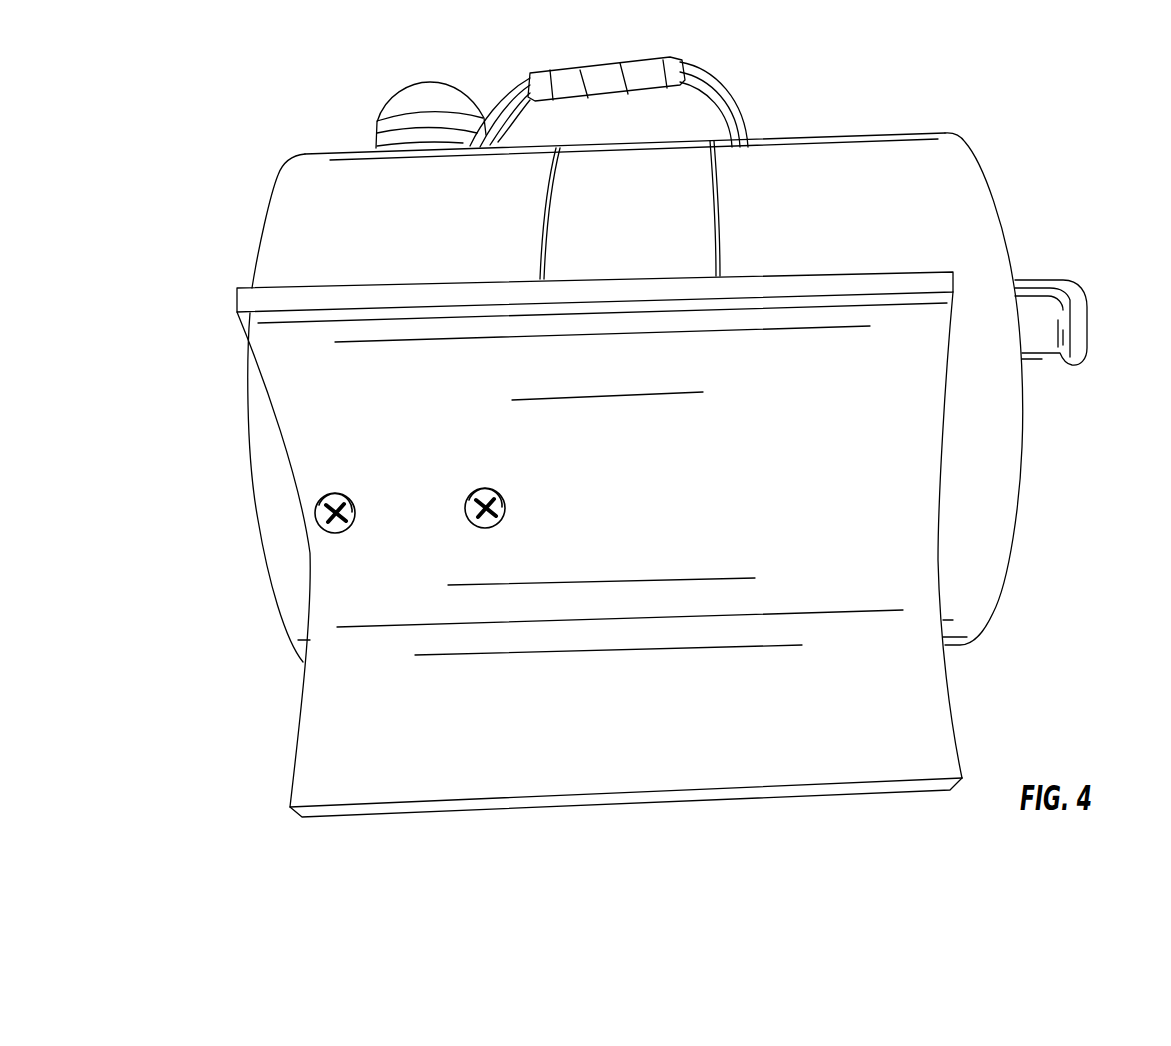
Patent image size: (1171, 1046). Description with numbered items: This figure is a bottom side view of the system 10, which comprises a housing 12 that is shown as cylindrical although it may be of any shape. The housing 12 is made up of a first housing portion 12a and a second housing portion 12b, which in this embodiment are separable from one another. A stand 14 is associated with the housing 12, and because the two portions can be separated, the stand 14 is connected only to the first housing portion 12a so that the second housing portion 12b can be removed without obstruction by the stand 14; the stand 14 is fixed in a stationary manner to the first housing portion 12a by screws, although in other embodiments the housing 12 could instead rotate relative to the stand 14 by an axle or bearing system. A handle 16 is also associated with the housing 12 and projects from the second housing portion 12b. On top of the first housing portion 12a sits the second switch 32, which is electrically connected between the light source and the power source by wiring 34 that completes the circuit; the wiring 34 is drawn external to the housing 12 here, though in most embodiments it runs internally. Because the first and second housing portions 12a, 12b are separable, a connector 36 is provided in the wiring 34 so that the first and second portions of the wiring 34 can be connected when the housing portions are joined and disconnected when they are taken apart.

The system 10 is at (746, 33).
The housing 12 is at (896, 124).
The first housing portion 12a is at (287, 210).
The second housing portion 12b is at (1005, 450).
The stand 14 is at (933, 724).
The handle 16 is at (1082, 306).
The second switch 32 is at (410, 100).
The wiring 34 is at (727, 97).
The connector 36 is at (598, 72).